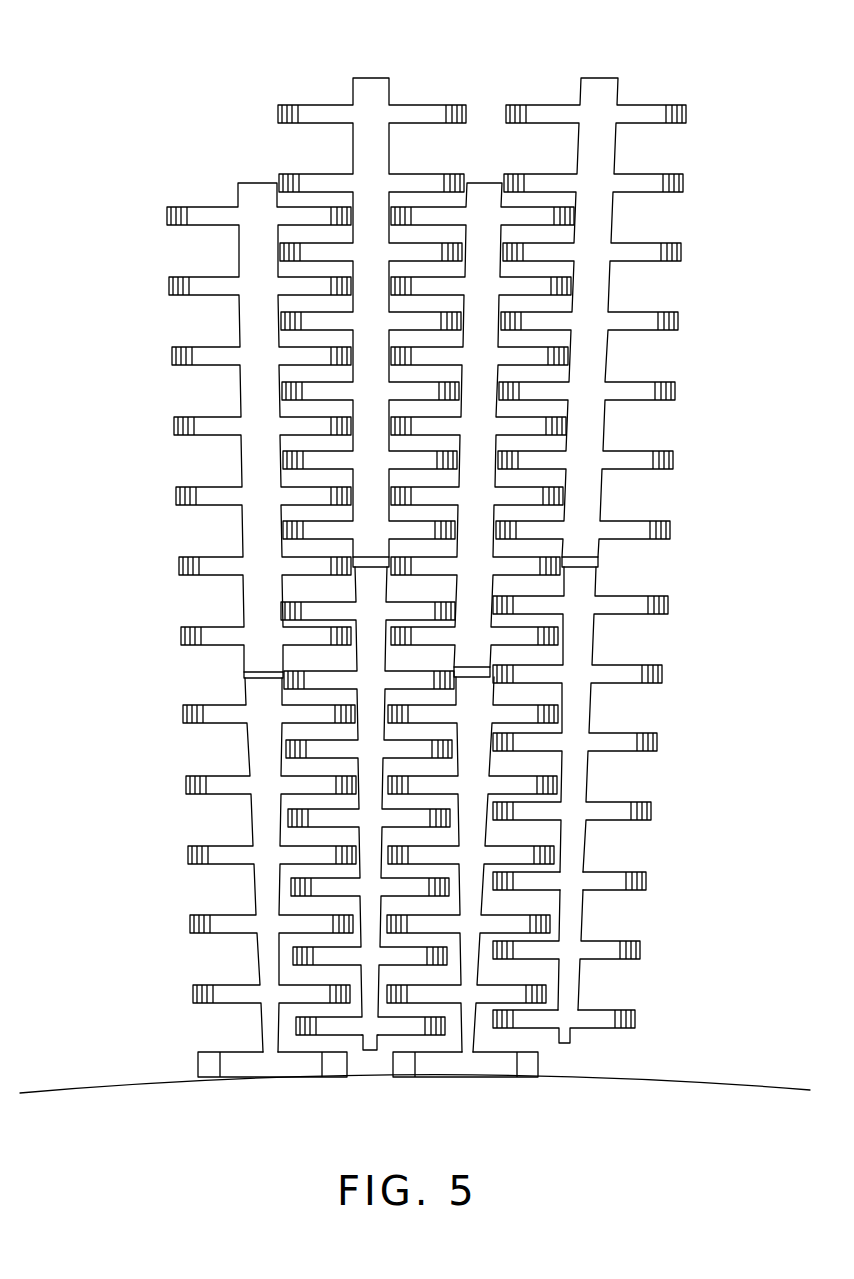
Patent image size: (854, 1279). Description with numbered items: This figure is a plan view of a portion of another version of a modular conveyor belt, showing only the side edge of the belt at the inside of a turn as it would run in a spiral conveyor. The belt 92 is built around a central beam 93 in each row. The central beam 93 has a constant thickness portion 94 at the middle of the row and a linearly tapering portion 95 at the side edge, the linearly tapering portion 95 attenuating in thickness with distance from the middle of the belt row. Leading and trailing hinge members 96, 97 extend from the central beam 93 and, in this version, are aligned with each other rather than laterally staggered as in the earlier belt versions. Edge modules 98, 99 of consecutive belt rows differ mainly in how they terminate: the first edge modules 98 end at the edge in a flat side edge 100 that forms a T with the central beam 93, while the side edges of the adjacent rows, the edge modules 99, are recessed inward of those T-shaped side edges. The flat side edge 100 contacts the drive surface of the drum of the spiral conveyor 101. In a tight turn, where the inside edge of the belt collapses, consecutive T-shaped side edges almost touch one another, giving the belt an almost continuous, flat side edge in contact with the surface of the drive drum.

The belt 92 is at (158, 72).
The central beam 93 is at (376, 90).
The constant thickness portion 94 is at (598, 362).
The linearly tapering portion 95 is at (592, 643).
The leading hinge member 96 is at (540, 878).
The trailing hinge member 97 is at (632, 887).
The first edge module 98 is at (263, 967).
The edge module 99 is at (567, 978).
The flat side edge 100 is at (253, 1072).
The spiral conveyor 101 is at (676, 1082).